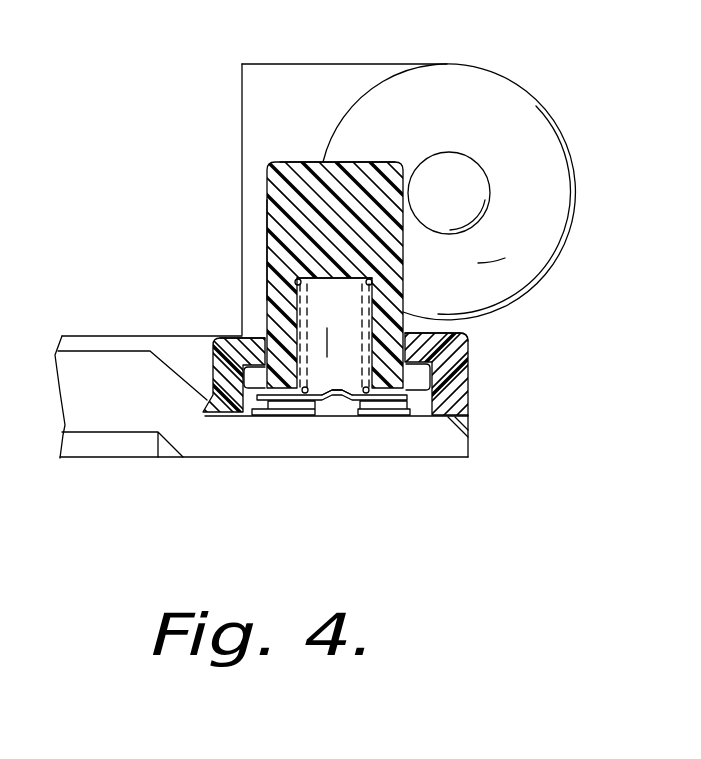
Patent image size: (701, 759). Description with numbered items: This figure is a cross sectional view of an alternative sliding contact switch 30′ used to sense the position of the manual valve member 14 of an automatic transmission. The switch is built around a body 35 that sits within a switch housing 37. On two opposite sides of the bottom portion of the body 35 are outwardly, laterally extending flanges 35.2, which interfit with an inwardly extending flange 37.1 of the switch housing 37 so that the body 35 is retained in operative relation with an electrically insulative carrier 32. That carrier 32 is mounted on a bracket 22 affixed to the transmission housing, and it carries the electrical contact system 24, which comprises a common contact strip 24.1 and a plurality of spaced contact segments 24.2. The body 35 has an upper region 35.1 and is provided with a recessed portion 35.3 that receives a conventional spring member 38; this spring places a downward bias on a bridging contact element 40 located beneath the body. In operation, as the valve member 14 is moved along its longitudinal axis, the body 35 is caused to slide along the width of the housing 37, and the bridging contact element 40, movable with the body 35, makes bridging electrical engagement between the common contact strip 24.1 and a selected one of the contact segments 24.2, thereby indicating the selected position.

The valve member 14 is at (533, 248).
The bracket 22 is at (122, 445).
The electrical contact system 24 is at (423, 425).
The common contact strip 24.1 is at (390, 418).
The contact segments 24.2 is at (290, 418).
The alternative contact switch 30′ is at (257, 412).
The electrically insulative carrier 32 is at (363, 445).
The body 35 is at (281, 201).
The top face of bearing block 35.1 is at (302, 160).
The flanges 35.2 is at (252, 377).
The recessed portion 35.3 is at (298, 247).
The switch housing 37 is at (460, 398).
The inwardly extending flange 37.1 is at (243, 335).
The spring member 38 is at (297, 280).
The bridging contact element 40 is at (333, 392).